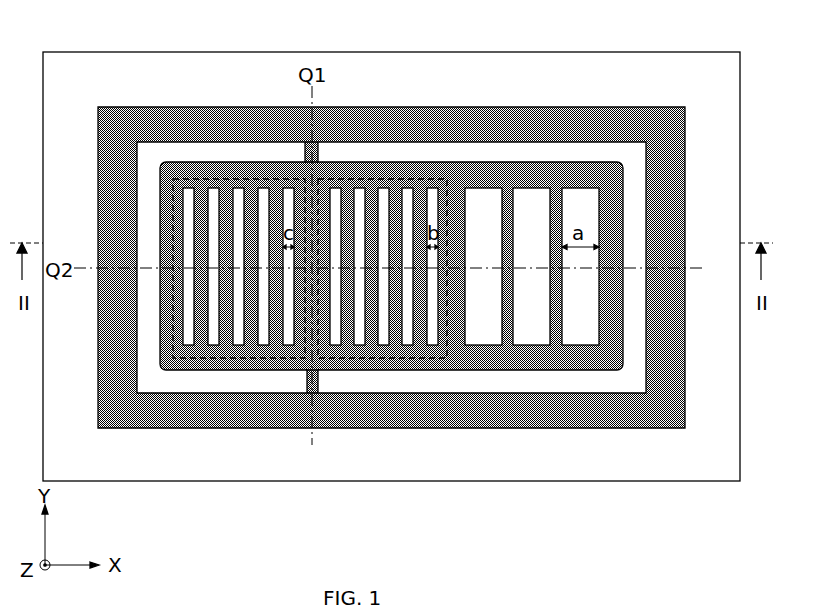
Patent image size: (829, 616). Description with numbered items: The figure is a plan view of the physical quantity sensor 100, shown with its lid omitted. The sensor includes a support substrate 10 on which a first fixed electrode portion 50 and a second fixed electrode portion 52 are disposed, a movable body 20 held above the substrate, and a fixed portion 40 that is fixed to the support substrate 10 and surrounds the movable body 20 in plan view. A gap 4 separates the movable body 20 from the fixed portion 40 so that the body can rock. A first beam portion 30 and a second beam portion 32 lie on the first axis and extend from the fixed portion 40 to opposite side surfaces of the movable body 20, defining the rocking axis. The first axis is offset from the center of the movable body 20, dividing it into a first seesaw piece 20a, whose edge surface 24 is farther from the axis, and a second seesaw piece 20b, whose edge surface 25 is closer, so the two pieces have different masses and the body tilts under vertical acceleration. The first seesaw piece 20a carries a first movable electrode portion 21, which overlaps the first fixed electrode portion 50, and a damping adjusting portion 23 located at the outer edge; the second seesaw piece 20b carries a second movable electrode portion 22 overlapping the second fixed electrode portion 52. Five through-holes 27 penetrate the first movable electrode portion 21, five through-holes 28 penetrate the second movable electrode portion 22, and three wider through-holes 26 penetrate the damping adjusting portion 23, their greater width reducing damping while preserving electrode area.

The physical quantity sensor 100 is at (400, 240).
The support substrate 10 is at (599, 68).
The fixed portion 40 is at (519, 108).
The movable body 20 is at (392, 267).
The first seesaw piece 20a is at (467, 160).
The second seesaw piece 20b is at (235, 158).
The first movable electrode portion 21 is at (388, 269).
The second movable electrode portion 22 is at (226, 268).
The damping adjusting portion 23 is at (538, 330).
The edge surface 24 is at (630, 370).
The edge surface 25 is at (160, 364).
The through-hole 26 is at (478, 342).
The through-hole 27 is at (404, 182).
The through-hole 28 is at (187, 188).
The first beam portion 30 is at (304, 146).
The second beam portion 32 is at (319, 390).
The first fixed electrode portion 50 is at (388, 377).
The second fixed electrode portion 52 is at (225, 372).
The gap 4 is at (155, 257).